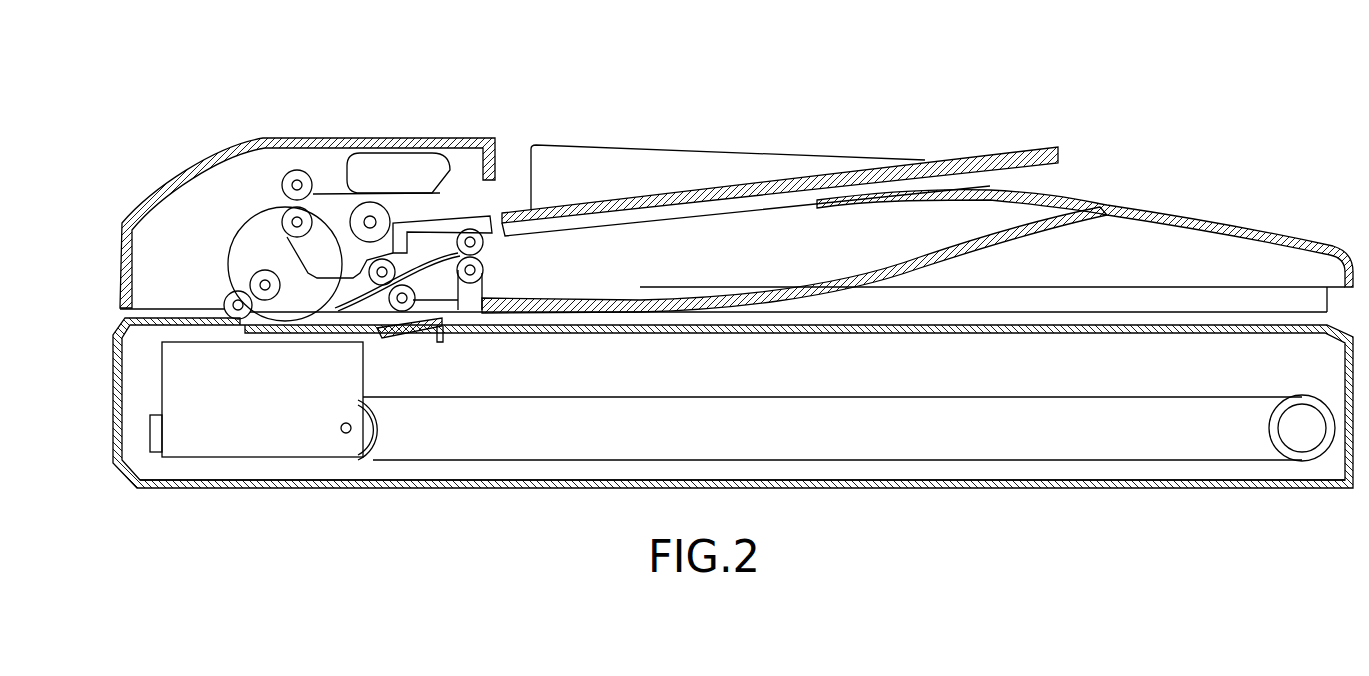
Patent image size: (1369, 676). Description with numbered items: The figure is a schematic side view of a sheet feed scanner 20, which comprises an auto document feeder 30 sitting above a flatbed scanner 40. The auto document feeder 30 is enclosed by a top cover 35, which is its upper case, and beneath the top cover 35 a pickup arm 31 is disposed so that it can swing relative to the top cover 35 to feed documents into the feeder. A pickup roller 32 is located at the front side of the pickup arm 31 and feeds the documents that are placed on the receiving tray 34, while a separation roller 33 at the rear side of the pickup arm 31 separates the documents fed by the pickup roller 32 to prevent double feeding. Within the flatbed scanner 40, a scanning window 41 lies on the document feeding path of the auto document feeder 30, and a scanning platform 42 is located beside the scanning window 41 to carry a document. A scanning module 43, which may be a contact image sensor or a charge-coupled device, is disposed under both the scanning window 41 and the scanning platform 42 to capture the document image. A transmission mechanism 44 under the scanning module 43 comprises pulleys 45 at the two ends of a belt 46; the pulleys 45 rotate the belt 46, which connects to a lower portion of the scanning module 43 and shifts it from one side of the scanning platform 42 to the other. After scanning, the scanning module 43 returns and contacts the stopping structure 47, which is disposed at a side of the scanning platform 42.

The sheet feed scanner 20 is at (1202, 180).
The auto document feeder 30 is at (296, 208).
The pickup arm 31 is at (413, 165).
The pickup roller 32 is at (433, 189).
The separation roller 33 is at (356, 208).
The receiving tray 34 is at (780, 182).
The top cover 35 is at (363, 138).
The flatbed scanner 40 is at (704, 428).
The scanning window 41 is at (273, 327).
The scanning platform 42 is at (1157, 328).
The scanning module 43 is at (242, 433).
The transmission mechanism 44 is at (763, 388).
The pulleys 45 is at (1300, 410).
The belt 46 is at (967, 460).
The stopping structure 47 is at (150, 440).